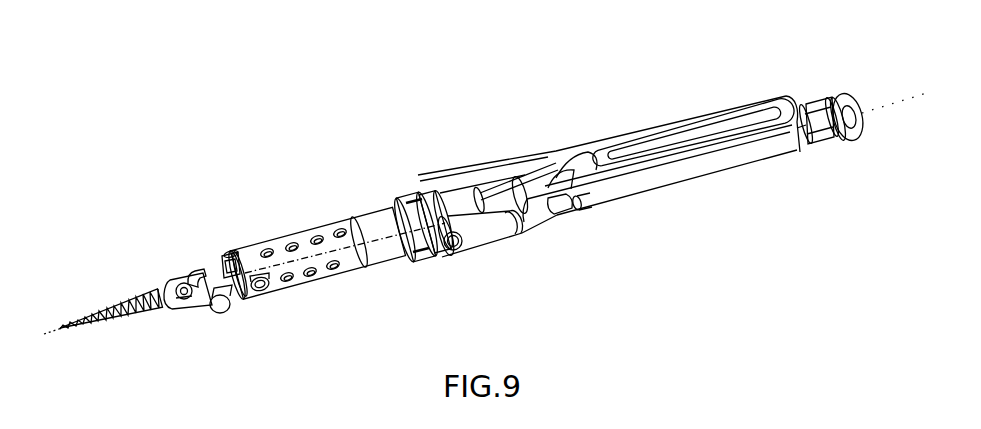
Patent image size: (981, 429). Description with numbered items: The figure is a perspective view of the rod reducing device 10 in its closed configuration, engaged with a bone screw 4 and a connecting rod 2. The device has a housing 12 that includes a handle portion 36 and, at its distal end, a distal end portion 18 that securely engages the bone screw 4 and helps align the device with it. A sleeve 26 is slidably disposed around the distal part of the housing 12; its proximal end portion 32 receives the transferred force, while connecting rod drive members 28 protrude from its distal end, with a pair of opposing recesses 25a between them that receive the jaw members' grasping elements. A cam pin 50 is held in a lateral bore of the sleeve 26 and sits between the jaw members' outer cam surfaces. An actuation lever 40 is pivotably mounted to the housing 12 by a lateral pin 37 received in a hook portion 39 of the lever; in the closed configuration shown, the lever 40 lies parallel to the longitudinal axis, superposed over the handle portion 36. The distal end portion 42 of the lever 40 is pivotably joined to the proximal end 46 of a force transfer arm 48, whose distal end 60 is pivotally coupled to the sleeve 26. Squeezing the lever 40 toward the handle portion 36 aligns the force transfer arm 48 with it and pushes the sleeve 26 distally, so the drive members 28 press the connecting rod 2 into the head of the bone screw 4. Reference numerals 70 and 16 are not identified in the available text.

The rod reducing device 10 is at (475, 198).
The bone screw 4 is at (110, 300).
The connecting rod 2 is at (215, 309).
The recesses 25a is at (189, 283).
The distal end portion 18 is at (223, 253).
The connecting rod drive members 28 is at (216, 323).
The sleeve 26 is at (362, 232).
The cam pin 50 is at (274, 308).
The coupling collar 70 is at (420, 193).
The proximal end portion 32 is at (457, 198).
The housing 12 is at (497, 197).
The distal end portion 42 is at (517, 210).
The force transfer arm 48 is at (480, 237).
The proximal end 46 is at (510, 230).
The distal end 60 is at (444, 250).
The elongated body 16 is at (667, 149).
The handle portion 36 is at (660, 186).
The actuation lever 40 is at (701, 101).
The lateral pin 37 is at (550, 229).
The hook portion 39 is at (575, 207).